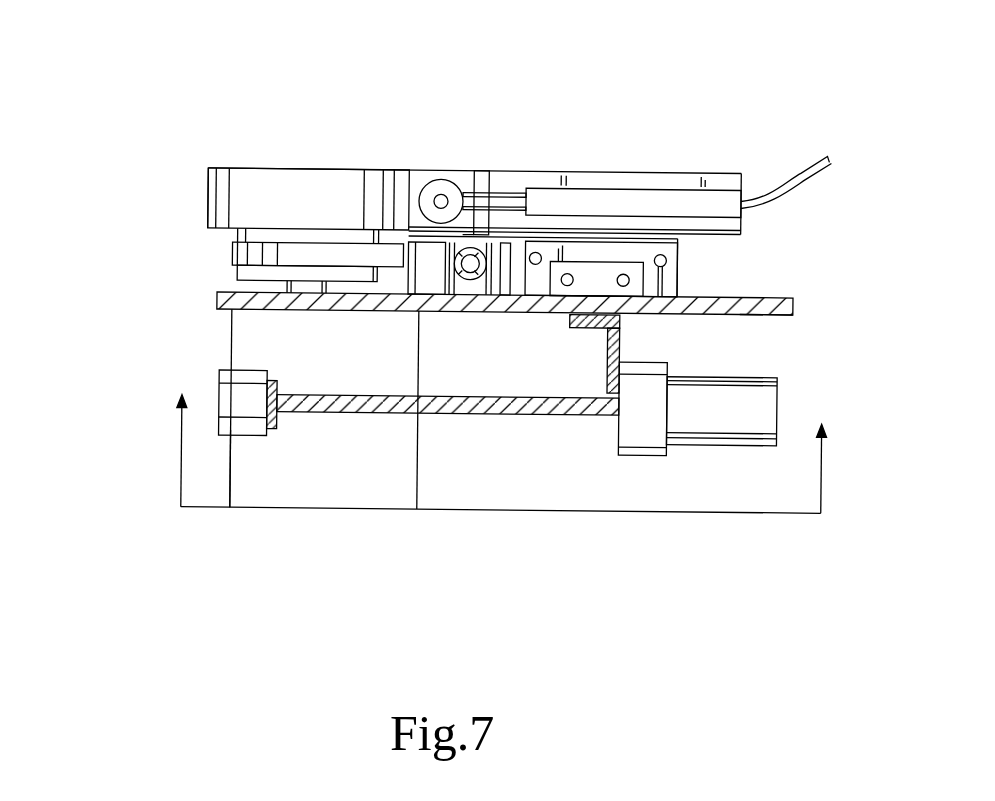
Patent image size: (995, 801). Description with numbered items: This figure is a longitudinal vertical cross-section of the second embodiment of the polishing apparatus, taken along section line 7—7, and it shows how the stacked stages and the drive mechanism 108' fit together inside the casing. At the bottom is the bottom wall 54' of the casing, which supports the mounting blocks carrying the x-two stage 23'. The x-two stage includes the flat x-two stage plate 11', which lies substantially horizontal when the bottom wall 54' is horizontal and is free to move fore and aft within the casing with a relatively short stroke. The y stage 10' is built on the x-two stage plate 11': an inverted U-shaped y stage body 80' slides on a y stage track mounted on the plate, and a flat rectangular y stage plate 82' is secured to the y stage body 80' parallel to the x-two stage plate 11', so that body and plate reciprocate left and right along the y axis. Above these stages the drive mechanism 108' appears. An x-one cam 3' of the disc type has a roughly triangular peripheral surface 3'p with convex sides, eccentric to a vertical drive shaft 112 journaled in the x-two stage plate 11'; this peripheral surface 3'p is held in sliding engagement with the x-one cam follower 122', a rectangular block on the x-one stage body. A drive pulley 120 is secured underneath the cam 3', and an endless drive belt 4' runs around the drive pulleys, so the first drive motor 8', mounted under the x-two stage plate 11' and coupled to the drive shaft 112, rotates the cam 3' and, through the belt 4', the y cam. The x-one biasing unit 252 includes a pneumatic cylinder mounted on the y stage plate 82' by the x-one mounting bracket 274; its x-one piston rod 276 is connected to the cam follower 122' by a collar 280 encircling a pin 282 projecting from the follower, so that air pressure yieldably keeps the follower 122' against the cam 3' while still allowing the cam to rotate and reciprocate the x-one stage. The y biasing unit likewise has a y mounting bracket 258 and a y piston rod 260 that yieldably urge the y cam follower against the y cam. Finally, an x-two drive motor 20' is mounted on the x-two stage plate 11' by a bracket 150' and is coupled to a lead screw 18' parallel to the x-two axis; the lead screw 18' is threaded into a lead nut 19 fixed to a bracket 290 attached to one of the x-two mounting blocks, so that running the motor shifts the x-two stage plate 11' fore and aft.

The x1 cam 3' is at (149, 150).
The peripheral surface of the x1 cam 3'p is at (309, 160).
The endless drive belt 4' is at (245, 247).
The mounting bracket plate 7 is at (610, 283).
The first drive motor 8' is at (187, 487).
The y stage 10' is at (662, 238).
The x2 stage plate 11' is at (803, 356).
The lead screw 18' is at (447, 434).
The lead nut 19 is at (240, 435).
The x2 drive motor 20' is at (768, 436).
The x2 stage 23' is at (567, 291).
The bottom wall 54' is at (500, 531).
The y stage body 80' is at (689, 264).
The y stage plate 82' is at (824, 189).
The drive mechanism 108' is at (424, 410).
The x1 drive shaft 112 is at (300, 287).
The drive pulley 120 is at (237, 278).
The x1 cam follower 122' is at (475, 121).
The bracket 150' is at (614, 408).
The x1 biasing unit 252 is at (620, 184).
The y mounting bracket 258 is at (483, 282).
The y piston rod 260 is at (467, 279).
The x1 mounting bracket 274 is at (482, 175).
The x1 piston rod 276 is at (522, 186).
The collar 280 is at (445, 177).
The pin 282 is at (436, 196).
The bracket 290 is at (277, 427).